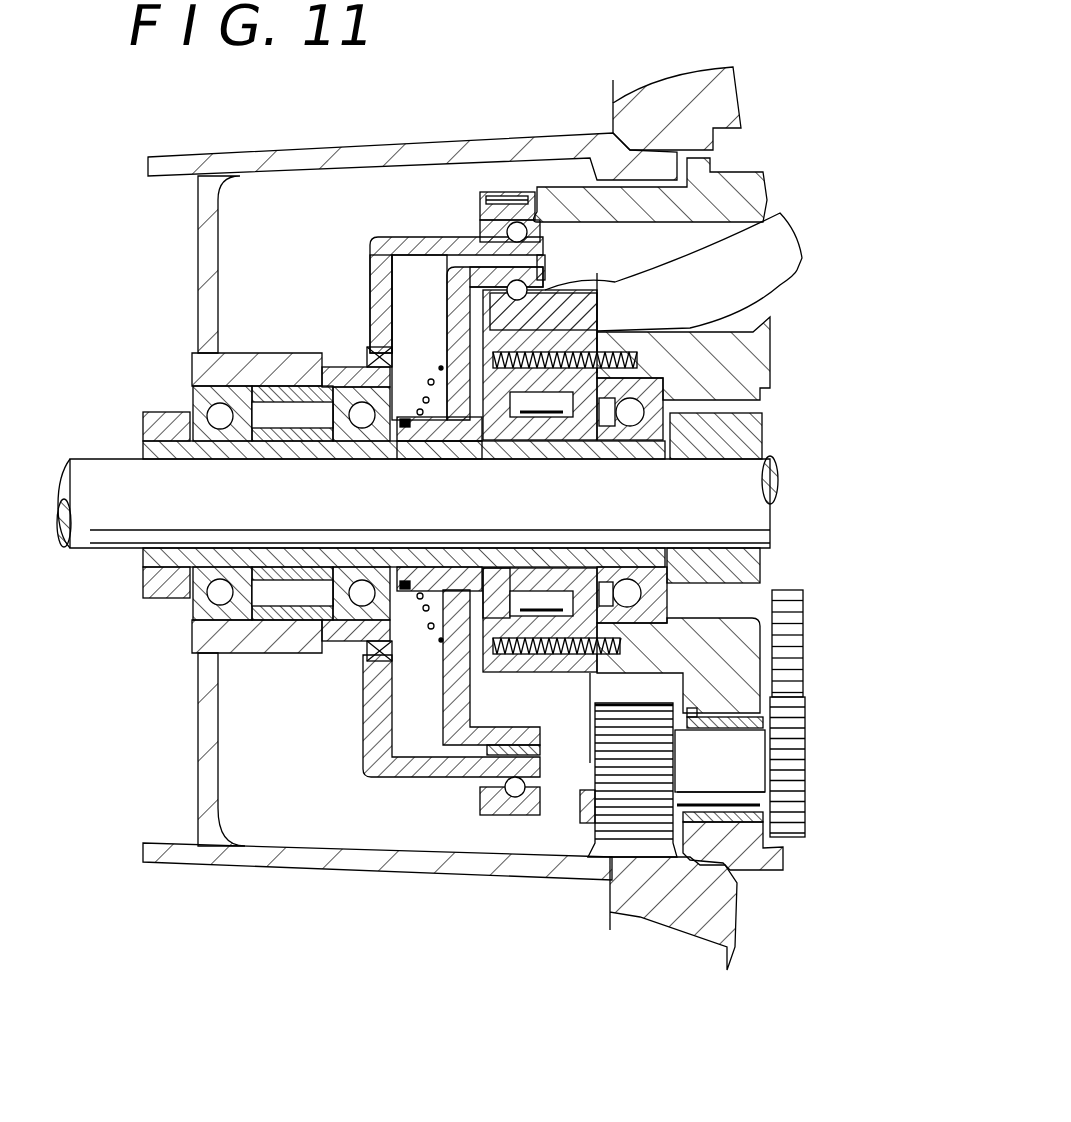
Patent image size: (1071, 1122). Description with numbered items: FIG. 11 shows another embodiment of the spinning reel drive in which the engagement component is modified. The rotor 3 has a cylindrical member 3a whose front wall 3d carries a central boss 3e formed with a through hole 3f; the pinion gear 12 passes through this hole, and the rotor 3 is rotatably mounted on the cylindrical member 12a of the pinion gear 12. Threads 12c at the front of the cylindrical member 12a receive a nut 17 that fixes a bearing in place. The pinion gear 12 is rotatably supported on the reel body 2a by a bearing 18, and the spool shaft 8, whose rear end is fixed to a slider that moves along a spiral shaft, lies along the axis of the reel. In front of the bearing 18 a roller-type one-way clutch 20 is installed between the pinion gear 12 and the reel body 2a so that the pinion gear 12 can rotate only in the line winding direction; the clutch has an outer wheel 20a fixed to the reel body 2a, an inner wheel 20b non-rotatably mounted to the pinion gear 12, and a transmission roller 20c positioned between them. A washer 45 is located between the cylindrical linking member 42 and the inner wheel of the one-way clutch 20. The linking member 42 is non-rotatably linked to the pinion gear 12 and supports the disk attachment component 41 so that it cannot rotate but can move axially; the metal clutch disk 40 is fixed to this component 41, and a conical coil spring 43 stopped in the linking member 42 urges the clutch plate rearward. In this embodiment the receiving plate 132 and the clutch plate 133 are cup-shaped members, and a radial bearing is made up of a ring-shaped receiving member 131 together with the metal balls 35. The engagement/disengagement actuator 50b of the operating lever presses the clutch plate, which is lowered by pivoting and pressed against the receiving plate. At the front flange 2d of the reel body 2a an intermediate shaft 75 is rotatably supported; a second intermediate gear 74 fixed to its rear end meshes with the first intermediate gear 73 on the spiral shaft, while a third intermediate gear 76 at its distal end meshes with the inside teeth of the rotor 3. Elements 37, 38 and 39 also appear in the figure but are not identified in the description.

The rotor 3 is at (490, 132).
The cylindrical member 3a is at (375, 150).
The front wall 3d is at (200, 268).
The boss 3e is at (240, 365).
The through hole 3f is at (230, 403).
The spool shaft 8 is at (745, 488).
The pinion gear 12 is at (706, 444).
The cylindrical member 12a is at (260, 448).
The threads 12c is at (150, 434).
The nut 17 is at (172, 598).
The bearing 18 is at (655, 600).
The reel body 2a is at (753, 358).
The front flange 2d is at (740, 675).
The roller-type one-way clutch 20 is at (570, 675).
The outer wheel 20a is at (538, 660).
The inner wheel 20b is at (495, 573).
The transmission roller 20c is at (545, 605).
The metal balls 35 is at (540, 232).
The retainer plate 37 is at (410, 240).
The bearing block 38 is at (340, 382).
The flange member 39 is at (625, 850).
The clutch disk 40 is at (550, 268).
The disk attachment component 41 is at (385, 245).
The linking member 42 is at (425, 447).
The conical coil spring 43 is at (420, 402).
The washer 45 is at (477, 440).
The engagement/disengagement actuator 50b is at (600, 282).
The first intermediate gear 73 is at (790, 595).
The second intermediate gear 74 is at (795, 832).
The intermediate shaft 75 is at (720, 790).
The third intermediate gear 76 is at (610, 805).
The ring-shaped receiving member 131 is at (495, 212).
The receiving plate 132 is at (368, 293).
The clutch plate 133 is at (445, 285).